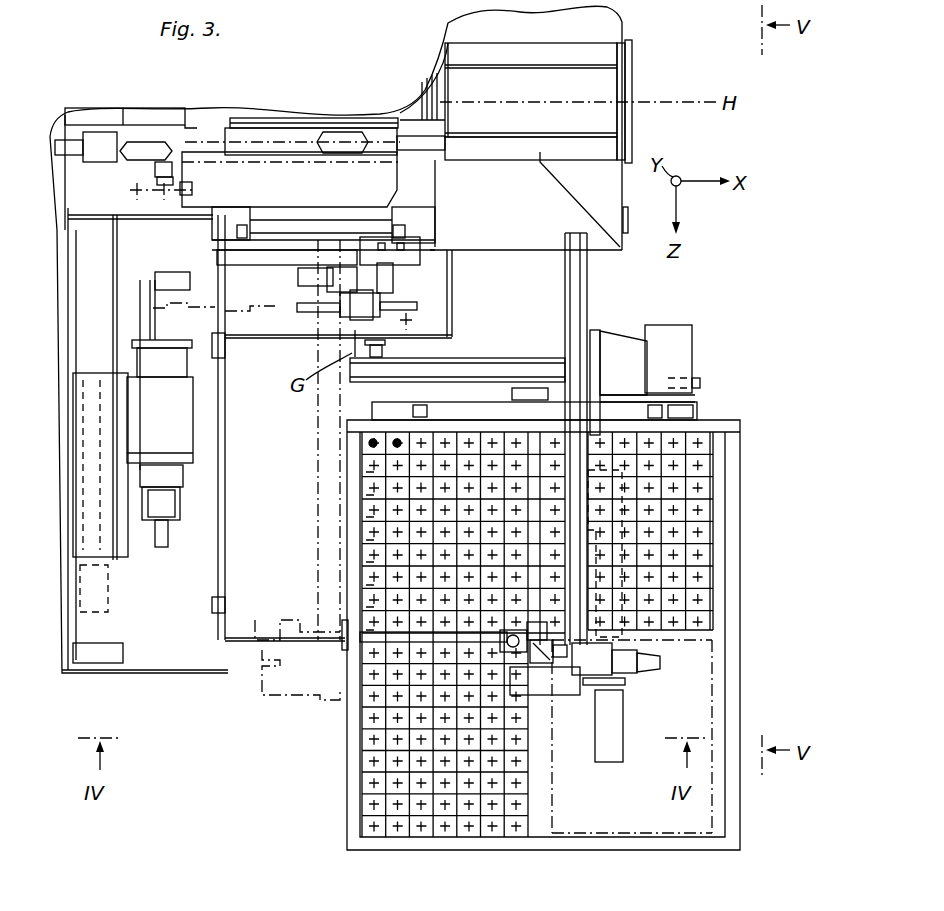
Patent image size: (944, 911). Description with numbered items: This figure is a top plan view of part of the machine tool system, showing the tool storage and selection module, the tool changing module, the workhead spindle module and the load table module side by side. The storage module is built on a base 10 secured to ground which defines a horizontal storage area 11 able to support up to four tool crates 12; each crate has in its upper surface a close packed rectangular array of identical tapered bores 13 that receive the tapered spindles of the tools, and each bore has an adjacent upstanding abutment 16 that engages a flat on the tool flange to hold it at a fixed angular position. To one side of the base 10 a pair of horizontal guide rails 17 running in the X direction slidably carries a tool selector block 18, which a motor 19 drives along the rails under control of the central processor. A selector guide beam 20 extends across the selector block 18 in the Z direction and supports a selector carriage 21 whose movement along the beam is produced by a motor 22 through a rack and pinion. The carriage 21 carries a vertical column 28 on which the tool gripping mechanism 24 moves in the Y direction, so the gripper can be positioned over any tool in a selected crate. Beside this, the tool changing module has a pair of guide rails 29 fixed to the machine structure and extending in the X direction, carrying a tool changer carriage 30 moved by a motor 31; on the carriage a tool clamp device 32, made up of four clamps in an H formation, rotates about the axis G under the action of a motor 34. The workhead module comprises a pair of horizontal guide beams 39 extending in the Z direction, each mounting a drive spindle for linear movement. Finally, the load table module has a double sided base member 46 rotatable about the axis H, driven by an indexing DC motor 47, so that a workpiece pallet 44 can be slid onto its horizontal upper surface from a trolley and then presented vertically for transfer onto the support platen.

The base 10 is at (610, 846).
The horizontal storage area 11 is at (615, 809).
The tool crate 12 is at (390, 793).
The tapered bore 13 is at (397, 440).
The upstanding abutment 16 is at (368, 514).
The horizontal guide rails 17 is at (495, 380).
The tool selector block 18 is at (617, 345).
The motor 19 is at (667, 340).
The selector guide beam 20 is at (568, 288).
The selector carriage 21 is at (620, 683).
The motor 22 is at (652, 660).
The tool gripping mechanism 24 is at (522, 659).
The vertical column 28 is at (540, 655).
The guide rails 29 is at (247, 250).
The tool changer carriage 30 is at (410, 263).
The motor 31 is at (422, 257).
The tool clamp device 32 is at (350, 318).
The motor 34 is at (312, 278).
The horizontal guide beams 39 is at (95, 279).
The workpiece pallet 44 is at (606, 49).
The double sided base member 46 is at (598, 88).
The indexing DC motor 47 is at (634, 125).